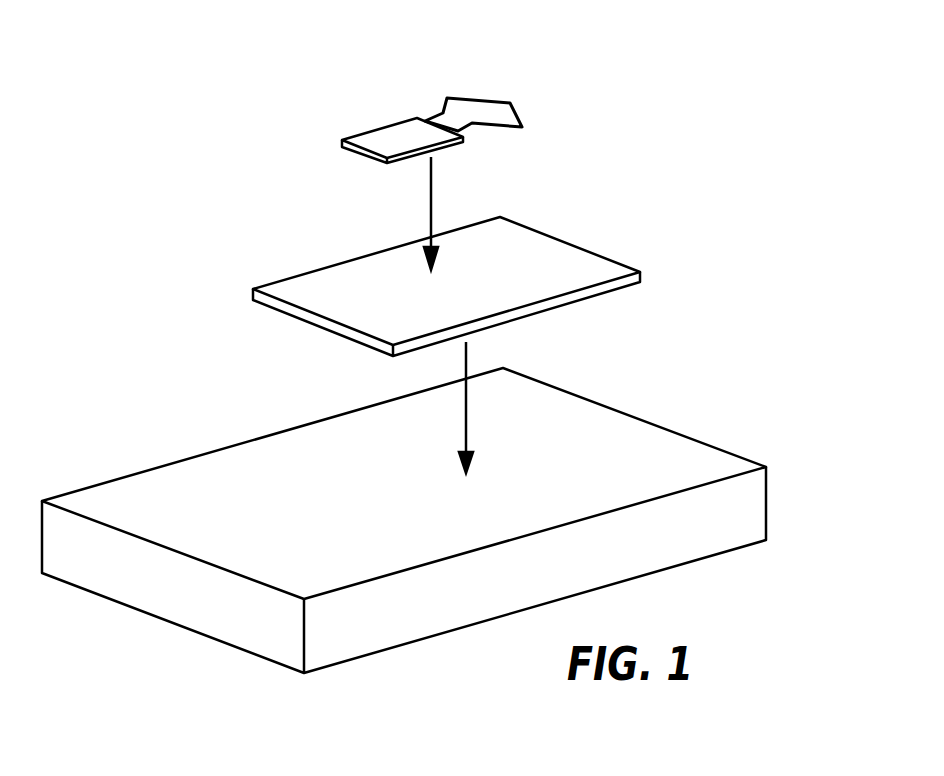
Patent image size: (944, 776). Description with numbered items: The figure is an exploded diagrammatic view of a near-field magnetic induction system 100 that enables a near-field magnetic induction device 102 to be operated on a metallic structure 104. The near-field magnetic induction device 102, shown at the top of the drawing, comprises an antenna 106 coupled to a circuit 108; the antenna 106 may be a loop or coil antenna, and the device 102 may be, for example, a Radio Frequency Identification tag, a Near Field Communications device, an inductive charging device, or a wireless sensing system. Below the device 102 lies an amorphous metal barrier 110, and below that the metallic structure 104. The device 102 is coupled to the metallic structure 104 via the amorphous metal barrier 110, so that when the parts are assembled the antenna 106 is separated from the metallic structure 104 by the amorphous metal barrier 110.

The near-field magnetic induction system 100 is at (775, 93).
The near-field magnetic induction device 102 is at (522, 65).
The metallic structure 104 is at (277, 432).
The antenna 106 is at (447, 98).
The circuit 108 is at (368, 131).
The amorphous metal barrier 110 is at (313, 270).